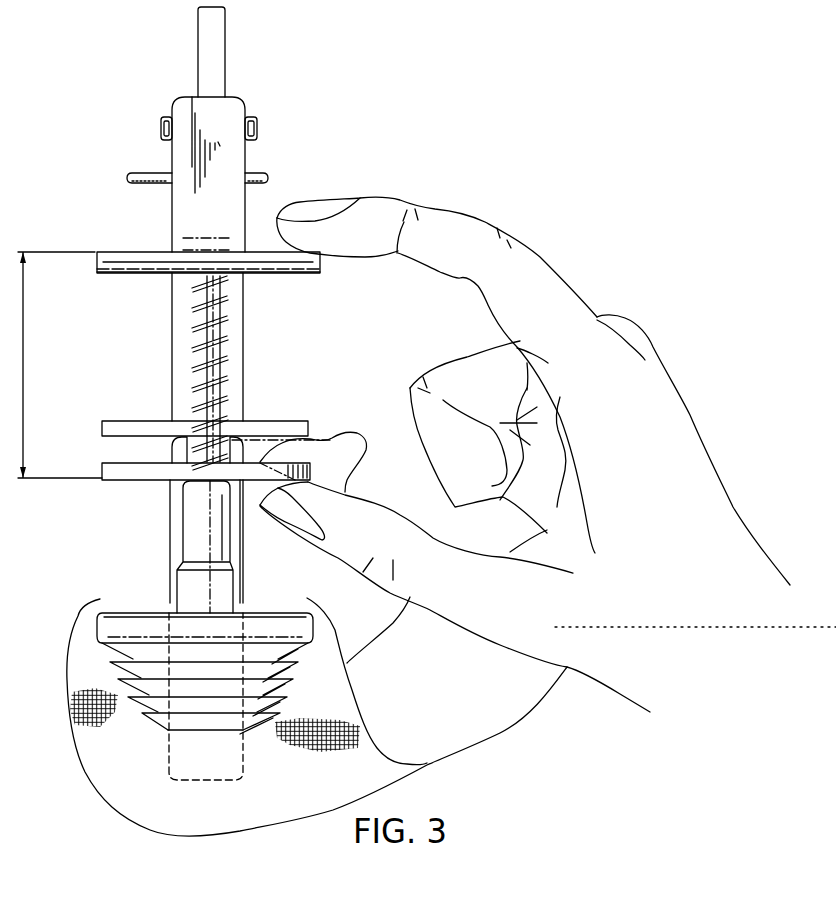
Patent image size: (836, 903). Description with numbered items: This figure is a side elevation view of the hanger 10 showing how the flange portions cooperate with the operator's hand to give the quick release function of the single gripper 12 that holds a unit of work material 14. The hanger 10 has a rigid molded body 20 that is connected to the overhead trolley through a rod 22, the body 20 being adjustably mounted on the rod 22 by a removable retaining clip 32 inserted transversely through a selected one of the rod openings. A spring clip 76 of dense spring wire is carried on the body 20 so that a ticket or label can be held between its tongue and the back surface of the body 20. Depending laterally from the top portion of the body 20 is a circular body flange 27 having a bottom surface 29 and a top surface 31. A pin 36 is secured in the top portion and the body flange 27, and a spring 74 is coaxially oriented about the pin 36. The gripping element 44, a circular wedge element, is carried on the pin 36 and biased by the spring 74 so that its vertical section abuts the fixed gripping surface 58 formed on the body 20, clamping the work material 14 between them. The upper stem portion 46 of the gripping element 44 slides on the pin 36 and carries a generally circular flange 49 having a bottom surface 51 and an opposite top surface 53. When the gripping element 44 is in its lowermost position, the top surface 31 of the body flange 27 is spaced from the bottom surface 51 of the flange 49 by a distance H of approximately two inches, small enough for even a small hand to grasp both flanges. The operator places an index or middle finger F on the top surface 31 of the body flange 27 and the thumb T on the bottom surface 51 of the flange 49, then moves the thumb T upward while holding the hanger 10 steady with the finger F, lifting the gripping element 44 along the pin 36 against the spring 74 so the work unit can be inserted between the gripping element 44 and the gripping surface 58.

The hanger 10 is at (90, 184).
The gripper 12 is at (125, 590).
The unit of work material 14 is at (483, 715).
The body 20 is at (172, 357).
The rod 22 is at (227, 65).
The flange 27 is at (118, 250).
The bottom surface 29 is at (127, 276).
The top surface 31 is at (148, 250).
The retaining clip 32 is at (268, 172).
The pin 36 is at (227, 347).
The gripping element 44 is at (280, 613).
The upper stem portion 46 is at (183, 523).
The flange 49 is at (102, 463).
The bottom surface 51 is at (128, 480).
The top surface 53 is at (128, 463).
The gripping surface 58 is at (233, 738).
The spring 74 is at (230, 310).
The spring clip 76 is at (258, 131).
The distance H is at (25, 333).
The finger F is at (383, 196).
The thumb T is at (353, 449).